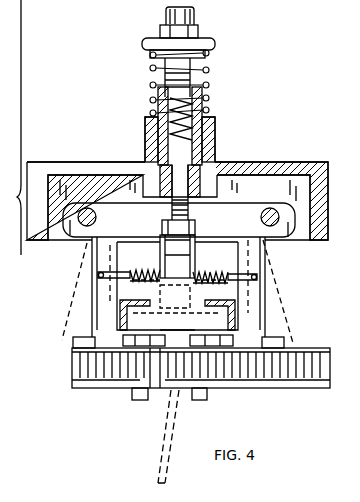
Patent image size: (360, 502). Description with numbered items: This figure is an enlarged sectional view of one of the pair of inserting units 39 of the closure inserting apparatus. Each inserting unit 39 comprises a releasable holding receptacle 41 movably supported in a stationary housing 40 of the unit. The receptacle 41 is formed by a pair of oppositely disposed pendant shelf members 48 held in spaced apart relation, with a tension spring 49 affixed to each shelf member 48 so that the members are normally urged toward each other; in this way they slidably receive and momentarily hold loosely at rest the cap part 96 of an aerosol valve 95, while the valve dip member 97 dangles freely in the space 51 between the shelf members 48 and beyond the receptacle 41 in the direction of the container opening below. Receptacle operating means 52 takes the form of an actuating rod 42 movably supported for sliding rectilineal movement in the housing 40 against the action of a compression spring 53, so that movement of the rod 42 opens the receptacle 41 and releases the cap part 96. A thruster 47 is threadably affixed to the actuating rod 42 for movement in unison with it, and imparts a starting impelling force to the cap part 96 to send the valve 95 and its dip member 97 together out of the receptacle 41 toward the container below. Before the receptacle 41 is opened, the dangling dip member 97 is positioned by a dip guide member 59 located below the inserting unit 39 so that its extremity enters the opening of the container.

The actuating rod 42 is at (195, 18).
The compression spring 53 is at (209, 72).
The inserting unit 39 is at (217, 118).
The stationary housing 40 is at (256, 198).
The receptacle operating means 52 is at (142, 180).
The thruster 47 is at (186, 255).
The releasable holding receptacle 41 is at (108, 286).
The tension spring 49 is at (218, 265).
The aerosol valve 95 is at (192, 295).
The cap part 96 is at (152, 300).
The pendant shelf member 48 is at (150, 343).
The space 51 is at (178, 343).
The dip guide member 59 is at (145, 400).
The valve dip member 97 is at (175, 466).